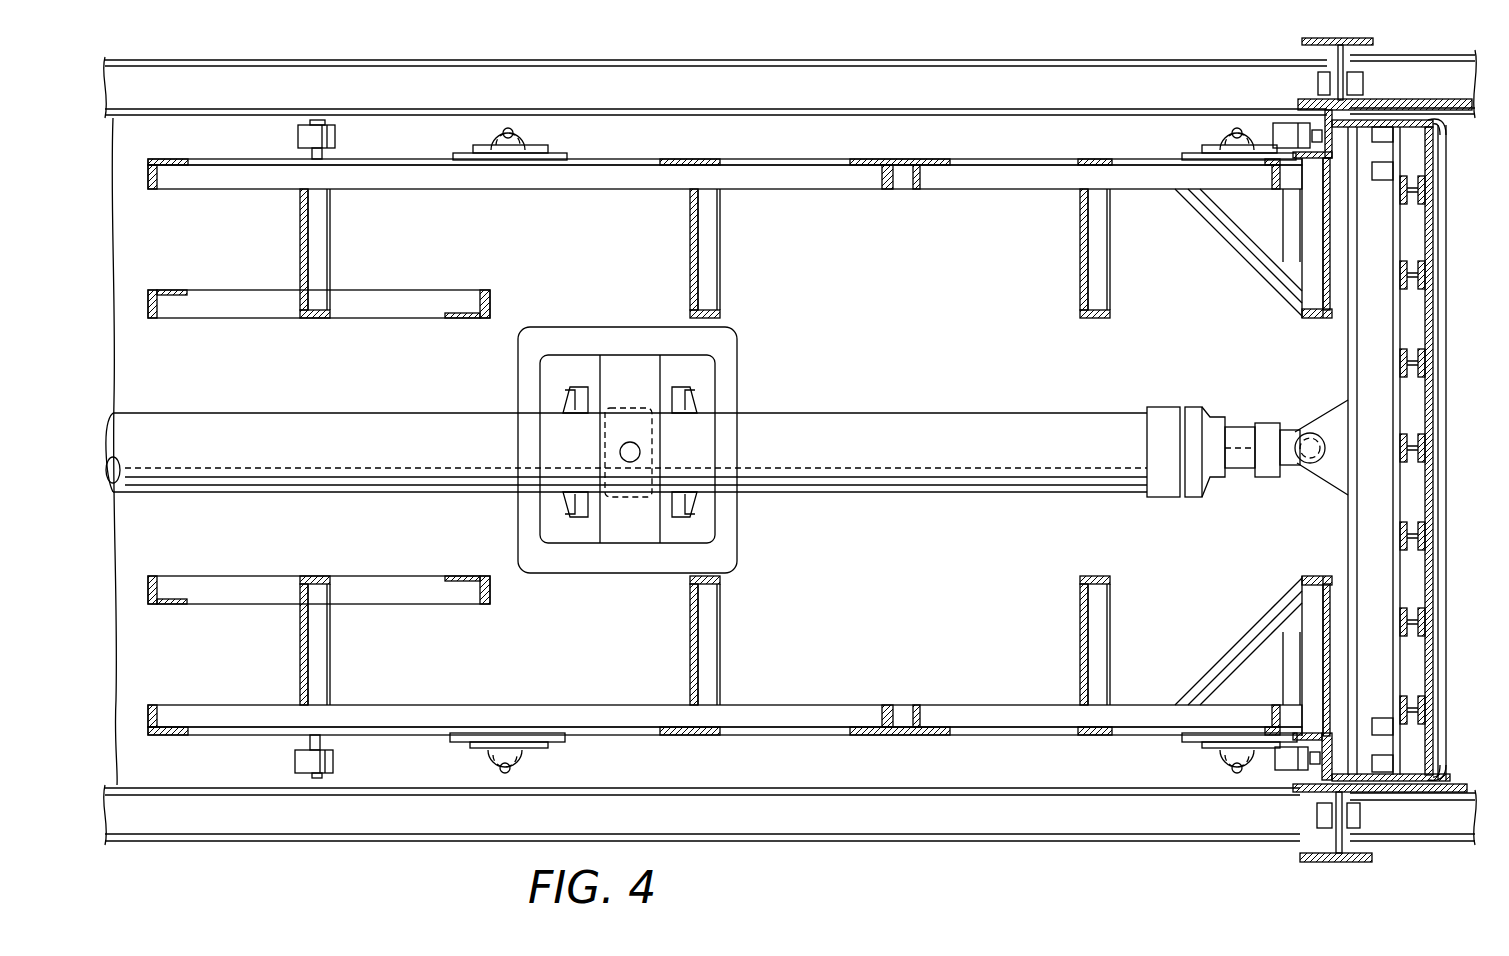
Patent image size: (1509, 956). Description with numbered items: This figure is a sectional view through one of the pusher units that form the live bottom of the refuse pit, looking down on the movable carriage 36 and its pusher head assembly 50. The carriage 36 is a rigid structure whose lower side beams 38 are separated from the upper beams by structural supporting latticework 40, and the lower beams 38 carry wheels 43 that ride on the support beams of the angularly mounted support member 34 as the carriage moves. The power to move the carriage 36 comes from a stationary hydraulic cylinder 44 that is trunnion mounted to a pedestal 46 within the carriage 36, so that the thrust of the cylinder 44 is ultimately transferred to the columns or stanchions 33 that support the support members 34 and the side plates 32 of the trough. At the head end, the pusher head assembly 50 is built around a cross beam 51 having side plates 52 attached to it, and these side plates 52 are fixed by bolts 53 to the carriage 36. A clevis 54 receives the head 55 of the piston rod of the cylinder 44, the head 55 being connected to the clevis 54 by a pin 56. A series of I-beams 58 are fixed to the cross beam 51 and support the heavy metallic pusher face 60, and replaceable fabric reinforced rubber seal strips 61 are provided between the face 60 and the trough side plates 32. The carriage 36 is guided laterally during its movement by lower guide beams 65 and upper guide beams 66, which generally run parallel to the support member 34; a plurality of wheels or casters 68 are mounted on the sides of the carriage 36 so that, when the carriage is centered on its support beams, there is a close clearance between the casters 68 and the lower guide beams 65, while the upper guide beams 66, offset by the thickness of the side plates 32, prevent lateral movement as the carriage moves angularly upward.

The side plates 32 is at (1433, 110).
The columns or stanchions 33 is at (1302, 41).
The support members 34 is at (257, 770).
The movable carriage 36 is at (738, 750).
The lower side beams 38 is at (303, 246).
The structural supporting latticework 40 is at (1210, 672).
The wheels 43 is at (340, 132).
The hydraulic cylinder 44 is at (303, 420).
The pedestal 46 is at (525, 362).
The pusher head assembly 50 is at (1452, 590).
The cross beam 51 is at (1365, 531).
The side plates 52 is at (1368, 120).
The bolts 53 is at (1300, 105).
The clevis 54 is at (1318, 475).
The head of the piston rod 55 is at (1262, 420).
The pin 56 is at (1308, 433).
The I-beams 58 is at (1430, 293).
The pusher face 60 is at (1448, 400).
The seal strips 61 is at (1448, 125).
The lower guide beams 65 is at (997, 78).
The upper guide beams 66 is at (1422, 75).
The wheels or casters 68 is at (512, 118).